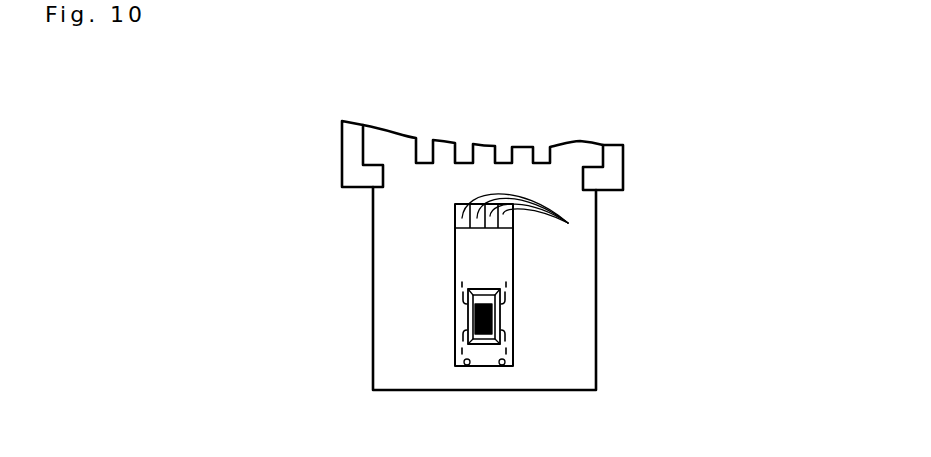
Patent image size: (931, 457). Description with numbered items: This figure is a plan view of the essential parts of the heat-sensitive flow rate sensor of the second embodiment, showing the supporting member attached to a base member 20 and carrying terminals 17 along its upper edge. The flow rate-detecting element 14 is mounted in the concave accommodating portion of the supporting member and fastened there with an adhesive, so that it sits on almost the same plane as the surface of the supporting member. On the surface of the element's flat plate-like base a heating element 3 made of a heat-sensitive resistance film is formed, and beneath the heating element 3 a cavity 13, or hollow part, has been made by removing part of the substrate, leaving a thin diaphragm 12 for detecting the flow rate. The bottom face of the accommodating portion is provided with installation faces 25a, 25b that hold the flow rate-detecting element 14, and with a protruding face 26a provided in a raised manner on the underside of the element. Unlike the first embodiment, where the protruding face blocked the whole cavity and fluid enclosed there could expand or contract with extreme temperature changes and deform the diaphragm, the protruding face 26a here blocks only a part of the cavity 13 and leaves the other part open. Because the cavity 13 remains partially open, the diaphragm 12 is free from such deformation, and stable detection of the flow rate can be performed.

The base member 20 is at (614, 167).
The terminals 17 is at (542, 153).
The flow rate-detecting element 14 is at (487, 255).
The heating element 3 is at (502, 305).
The cavity 13 is at (500, 316).
The diaphragm 12 is at (500, 331).
The protruding face 26a is at (459, 322).
The installation face 25a is at (465, 366).
The installation face 25b is at (501, 366).